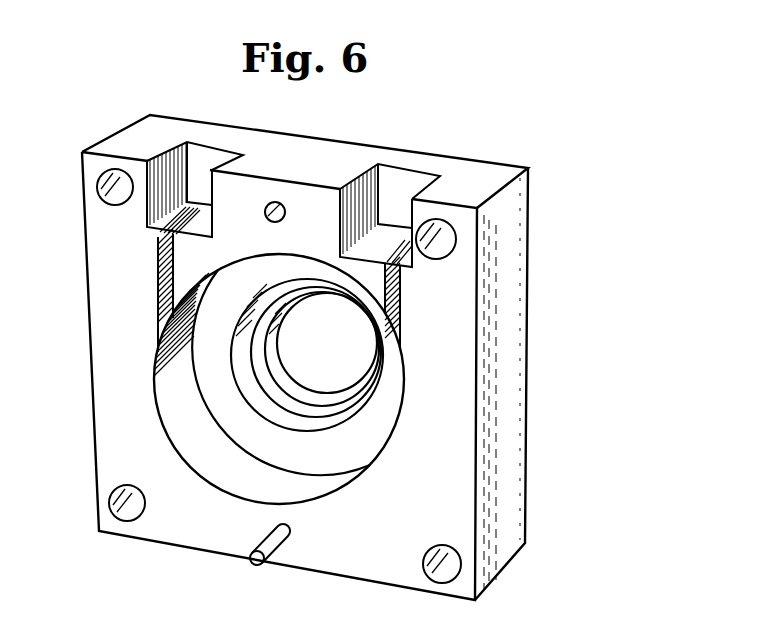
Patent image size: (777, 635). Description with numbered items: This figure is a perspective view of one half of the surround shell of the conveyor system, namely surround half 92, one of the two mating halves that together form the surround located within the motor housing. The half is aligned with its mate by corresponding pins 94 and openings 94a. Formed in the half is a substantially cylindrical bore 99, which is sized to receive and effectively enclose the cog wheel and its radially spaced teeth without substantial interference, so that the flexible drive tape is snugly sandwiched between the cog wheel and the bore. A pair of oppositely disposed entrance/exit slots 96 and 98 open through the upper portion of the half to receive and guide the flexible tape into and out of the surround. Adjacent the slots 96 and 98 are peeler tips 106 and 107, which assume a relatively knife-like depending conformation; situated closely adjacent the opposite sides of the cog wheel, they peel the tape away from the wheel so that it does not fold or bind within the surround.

The surround half 92 is at (540, 251).
The pin 94 is at (250, 562).
The opening 94a is at (283, 207).
The entrance/exit slot 96 is at (400, 257).
The entrance/exit slot 98 is at (188, 214).
The cylindrical bore 99 is at (228, 462).
The peeler tip 106 is at (392, 340).
The peeler tip 107 is at (157, 330).